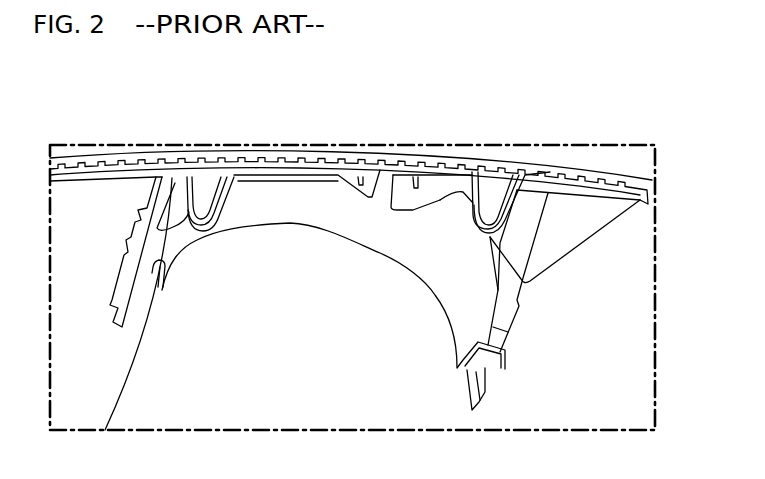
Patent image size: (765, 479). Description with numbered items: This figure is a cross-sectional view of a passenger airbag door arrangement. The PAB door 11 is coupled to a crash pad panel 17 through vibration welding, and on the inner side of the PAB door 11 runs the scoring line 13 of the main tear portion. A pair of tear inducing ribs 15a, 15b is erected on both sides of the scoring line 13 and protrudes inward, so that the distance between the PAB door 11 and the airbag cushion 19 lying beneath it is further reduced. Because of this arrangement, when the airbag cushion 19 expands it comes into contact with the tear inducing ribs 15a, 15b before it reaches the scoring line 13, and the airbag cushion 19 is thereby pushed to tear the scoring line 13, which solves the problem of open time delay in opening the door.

The PAB door 11 is at (570, 213).
The scoring line 13 is at (393, 176).
The tear inducing rib 15a is at (422, 182).
The tear inducing rib 15b is at (362, 176).
The crash pad panel 17 is at (554, 160).
The airbag cushion 19 is at (445, 387).